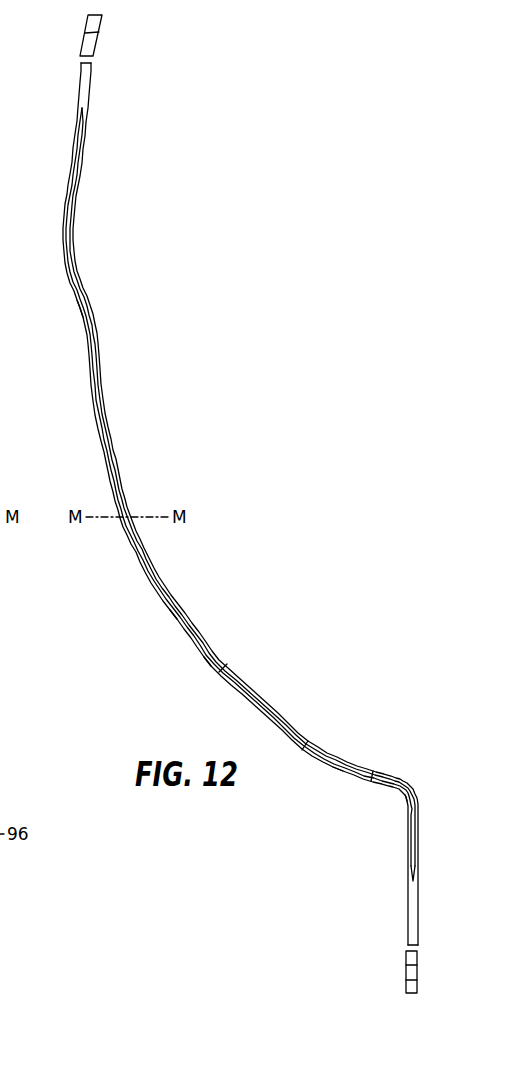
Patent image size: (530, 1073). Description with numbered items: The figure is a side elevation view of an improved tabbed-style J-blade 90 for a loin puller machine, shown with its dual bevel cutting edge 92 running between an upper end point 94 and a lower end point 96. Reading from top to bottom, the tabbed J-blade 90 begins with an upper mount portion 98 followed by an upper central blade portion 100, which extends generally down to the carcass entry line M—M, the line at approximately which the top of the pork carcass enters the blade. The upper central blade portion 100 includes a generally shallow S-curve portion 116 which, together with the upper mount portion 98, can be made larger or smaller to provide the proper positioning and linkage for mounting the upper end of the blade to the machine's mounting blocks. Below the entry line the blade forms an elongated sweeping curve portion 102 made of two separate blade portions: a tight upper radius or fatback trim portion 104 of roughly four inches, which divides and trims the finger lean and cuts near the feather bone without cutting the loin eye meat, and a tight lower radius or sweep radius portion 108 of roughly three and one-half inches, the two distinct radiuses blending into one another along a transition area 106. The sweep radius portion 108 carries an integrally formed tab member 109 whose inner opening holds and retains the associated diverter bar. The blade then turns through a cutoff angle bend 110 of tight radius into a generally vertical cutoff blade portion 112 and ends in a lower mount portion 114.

The tabbed J-blade 90 is at (196, 248).
The dual bevel cutting edge 92 is at (66, 200).
The upper end point 94 is at (84, 108).
The lower end point 96 is at (410, 879).
The upper mount portion 98 is at (104, 20).
The upper central blade portion 100 is at (92, 64).
The elongated sweeping curve portion 102 is at (168, 627).
The upper fatback trim portion 104 is at (142, 527).
The transition area 106 is at (203, 672).
The sweep radius portion 108 is at (420, 783).
The tab member 109 is at (340, 774).
The cutoff angle bend 110 is at (398, 802).
The cutoff blade portion 112 is at (424, 795).
The lower mount portion 114 is at (424, 951).
The S-curve portion 116 is at (76, 315).